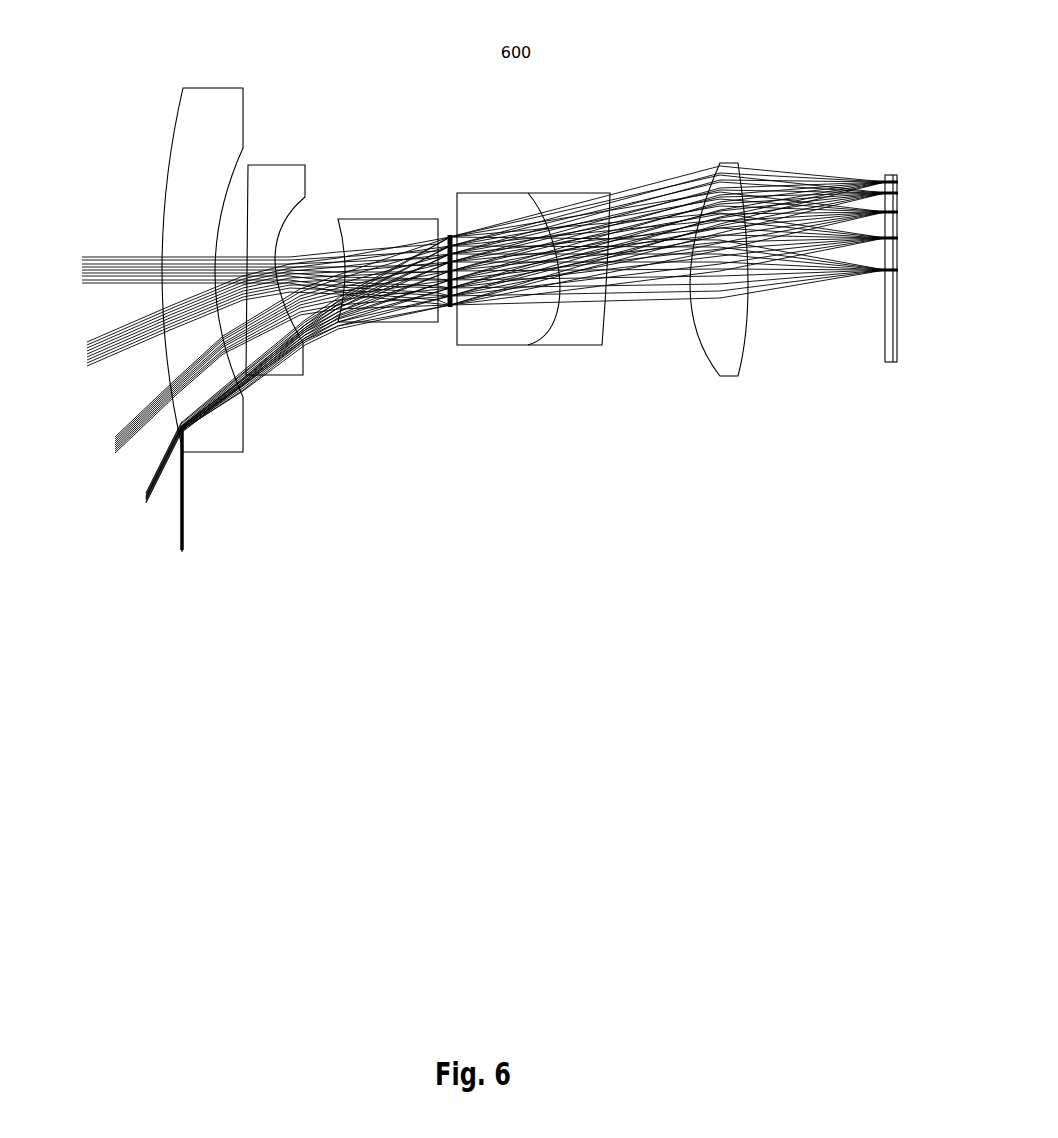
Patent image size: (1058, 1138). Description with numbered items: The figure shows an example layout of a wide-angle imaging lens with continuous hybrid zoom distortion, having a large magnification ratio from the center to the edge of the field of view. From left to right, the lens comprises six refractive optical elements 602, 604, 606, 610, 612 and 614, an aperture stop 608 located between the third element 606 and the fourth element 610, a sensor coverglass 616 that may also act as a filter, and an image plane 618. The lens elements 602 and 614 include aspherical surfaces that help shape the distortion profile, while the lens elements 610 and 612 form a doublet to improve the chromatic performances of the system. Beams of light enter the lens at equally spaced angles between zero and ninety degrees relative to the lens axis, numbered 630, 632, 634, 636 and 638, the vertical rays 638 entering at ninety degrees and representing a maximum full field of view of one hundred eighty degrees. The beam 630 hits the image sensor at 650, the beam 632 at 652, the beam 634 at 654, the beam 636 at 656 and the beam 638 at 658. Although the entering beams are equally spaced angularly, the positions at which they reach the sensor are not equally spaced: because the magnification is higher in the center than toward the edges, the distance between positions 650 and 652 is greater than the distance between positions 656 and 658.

The optical element 602 is at (202, 260).
The optical element 604 is at (275, 259).
The optical element 606 is at (388, 260).
The aperture stop 608 is at (450, 235).
The optical element 610 is at (533, 259).
The optical element 612 is at (553, 259).
The optical element 614 is at (719, 258).
The sensor coverglass 616 is at (878, 280).
The image plane 618 is at (897, 352).
The entering beam of light 630 is at (450, 271).
The entering beam of light 632 is at (459, 290).
The entering beam of light 634 is at (476, 322).
The entering beam of light 636 is at (497, 352).
The entering beam of light 638 is at (526, 370).
The image sensor position 650 is at (898, 270).
The image sensor position 652 is at (898, 238).
The image sensor position 654 is at (898, 212).
The image sensor position 656 is at (898, 193).
The image sensor position 658 is at (898, 182).